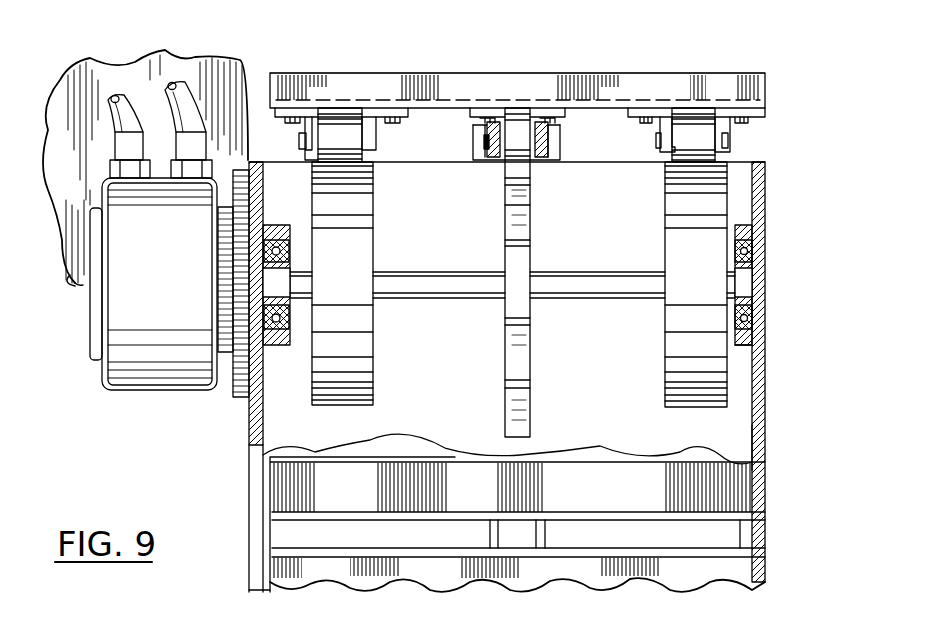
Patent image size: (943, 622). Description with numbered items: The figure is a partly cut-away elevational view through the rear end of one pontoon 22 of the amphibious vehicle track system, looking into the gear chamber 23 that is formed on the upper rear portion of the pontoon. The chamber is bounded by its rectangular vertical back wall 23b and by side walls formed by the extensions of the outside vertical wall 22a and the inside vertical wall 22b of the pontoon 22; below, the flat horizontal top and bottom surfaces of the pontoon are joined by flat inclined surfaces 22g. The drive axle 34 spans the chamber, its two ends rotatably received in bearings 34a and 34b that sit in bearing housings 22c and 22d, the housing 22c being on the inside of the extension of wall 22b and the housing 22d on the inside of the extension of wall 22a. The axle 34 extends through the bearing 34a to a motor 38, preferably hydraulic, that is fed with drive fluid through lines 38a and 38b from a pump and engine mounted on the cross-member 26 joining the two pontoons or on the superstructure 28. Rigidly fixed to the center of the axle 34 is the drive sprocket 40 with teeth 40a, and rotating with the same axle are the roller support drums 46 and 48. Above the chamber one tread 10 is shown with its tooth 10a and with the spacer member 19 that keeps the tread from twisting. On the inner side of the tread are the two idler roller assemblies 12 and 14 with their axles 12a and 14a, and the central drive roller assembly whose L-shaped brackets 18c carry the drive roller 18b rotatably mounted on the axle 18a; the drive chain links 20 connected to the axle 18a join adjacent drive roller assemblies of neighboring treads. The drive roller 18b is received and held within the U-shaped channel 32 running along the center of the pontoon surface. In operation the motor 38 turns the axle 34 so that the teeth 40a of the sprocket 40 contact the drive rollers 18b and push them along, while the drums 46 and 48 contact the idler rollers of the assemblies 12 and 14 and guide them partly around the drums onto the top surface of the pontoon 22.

The tread 10 is at (491, 64).
The tooth 10a is at (553, 100).
The idler roller assembly 12 is at (381, 131).
The axle 12a is at (308, 139).
The idler roller assembly 14 is at (735, 133).
The axle 14a is at (729, 144).
The axle 18a is at (484, 128).
The drive roller 18b is at (513, 136).
The L-shaped bracket 18c is at (566, 119).
The spacer member 19 is at (736, 95).
The drive chain link 20 is at (489, 539).
The pontoon 22 is at (770, 434).
The outside vertical wall 22a is at (752, 428).
The inside vertical wall 22b is at (264, 422).
The bearing housing 22c is at (290, 214).
The bearing housing 22d is at (757, 216).
The inclined surface 22g is at (252, 585).
The gear chamber 23 is at (427, 178).
The vertical back wall 23b is at (620, 230).
The cross-member 26 is at (76, 294).
The superstructure 28 is at (93, 62).
The U-shaped channel 32 is at (566, 149).
The drive axle 34 is at (402, 272).
The bearing 34a is at (279, 350).
The bearing 34b is at (752, 253).
The motor 38 is at (138, 403).
The hydraulic line 38a is at (112, 100).
The hydraulic line 38b is at (172, 84).
The drive sprocket 40 is at (498, 331).
The tooth 40a is at (531, 191).
The roller support drum 46 is at (378, 348).
The roller support drum 48 is at (659, 354).